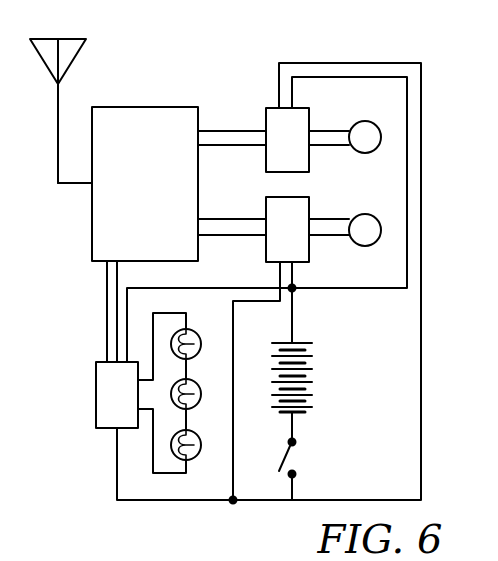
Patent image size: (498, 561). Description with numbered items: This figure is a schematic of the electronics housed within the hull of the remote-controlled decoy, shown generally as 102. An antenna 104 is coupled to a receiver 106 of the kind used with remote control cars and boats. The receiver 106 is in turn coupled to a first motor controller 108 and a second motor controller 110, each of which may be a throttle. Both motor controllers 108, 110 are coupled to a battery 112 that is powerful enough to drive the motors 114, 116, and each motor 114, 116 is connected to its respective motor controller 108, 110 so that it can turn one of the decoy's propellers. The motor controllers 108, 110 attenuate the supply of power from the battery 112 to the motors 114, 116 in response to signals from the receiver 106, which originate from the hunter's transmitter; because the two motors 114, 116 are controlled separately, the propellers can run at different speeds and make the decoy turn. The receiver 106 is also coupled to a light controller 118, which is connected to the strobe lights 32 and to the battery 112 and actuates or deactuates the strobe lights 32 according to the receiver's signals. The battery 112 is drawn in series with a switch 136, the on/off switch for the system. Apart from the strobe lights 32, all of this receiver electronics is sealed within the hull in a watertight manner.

The electronics schematic 102 is at (357, 47).
The antenna 104 is at (82, 52).
The receiver 106 is at (130, 116).
The first motor controller 108 is at (271, 113).
The second motor controller 110 is at (276, 207).
The battery 112 is at (302, 341).
The motor 114 is at (369, 134).
The motor 116 is at (368, 226).
The light controller 118 is at (107, 367).
The strobe lights 32 is at (188, 458).
The switch 136 is at (288, 450).